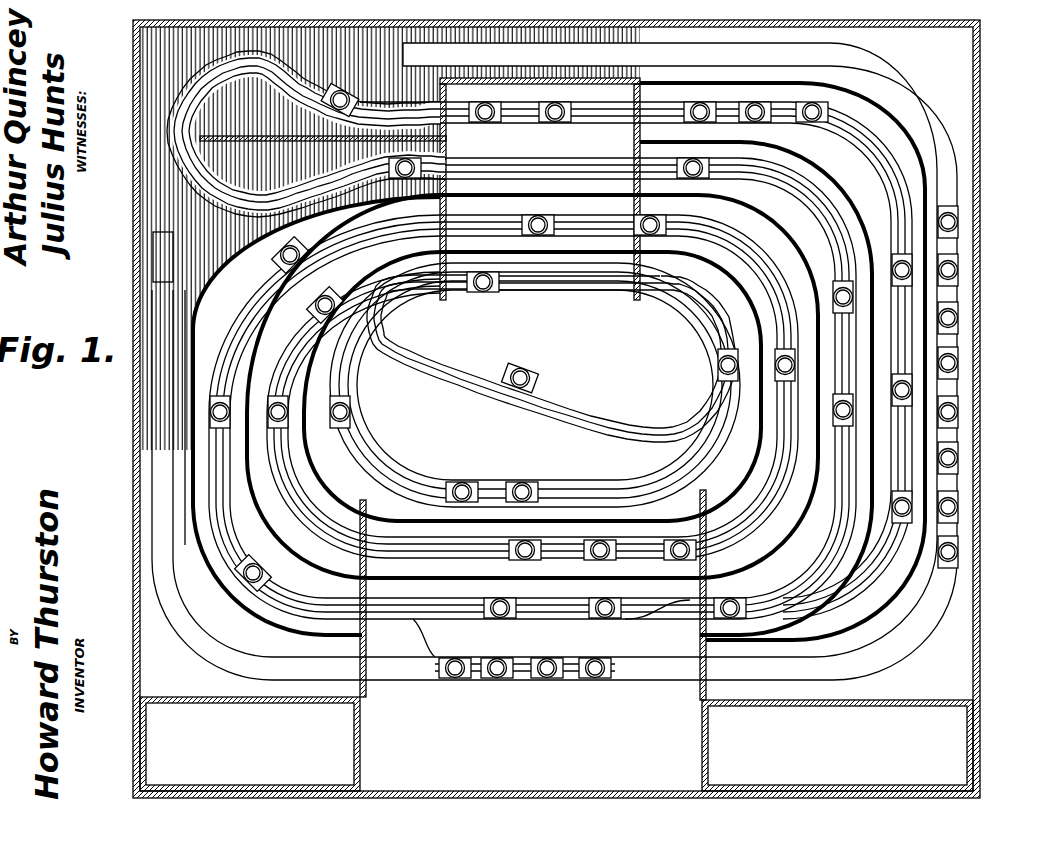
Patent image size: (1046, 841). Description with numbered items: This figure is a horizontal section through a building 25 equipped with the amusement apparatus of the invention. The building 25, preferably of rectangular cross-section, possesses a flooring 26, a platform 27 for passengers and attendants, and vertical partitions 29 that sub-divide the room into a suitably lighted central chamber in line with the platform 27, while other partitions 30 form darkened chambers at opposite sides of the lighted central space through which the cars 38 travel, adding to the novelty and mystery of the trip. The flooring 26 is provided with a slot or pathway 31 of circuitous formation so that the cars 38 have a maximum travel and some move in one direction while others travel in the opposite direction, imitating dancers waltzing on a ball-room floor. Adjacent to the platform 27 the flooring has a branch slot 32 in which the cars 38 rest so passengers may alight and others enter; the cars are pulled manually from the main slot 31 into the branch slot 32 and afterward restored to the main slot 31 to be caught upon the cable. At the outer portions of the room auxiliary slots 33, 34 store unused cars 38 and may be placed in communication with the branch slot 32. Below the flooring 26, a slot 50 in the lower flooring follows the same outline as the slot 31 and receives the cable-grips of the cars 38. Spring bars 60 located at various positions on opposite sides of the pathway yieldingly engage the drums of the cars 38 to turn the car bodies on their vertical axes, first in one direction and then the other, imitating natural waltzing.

The building 25 is at (153, 238).
The flooring 26 is at (556, 409).
The platform 27 is at (556, 744).
The vertical partitions 29 is at (366, 576).
The partitions 30 is at (882, 612).
The slot or pathway 31 is at (812, 596).
The branch slot 32 is at (442, 665).
The auxiliary slot 33 is at (162, 530).
The auxiliary slot 34 is at (928, 622).
The car 38 is at (960, 364).
The slot in lower flooring 50 is at (610, 566).
The spring bar 60 is at (575, 400).